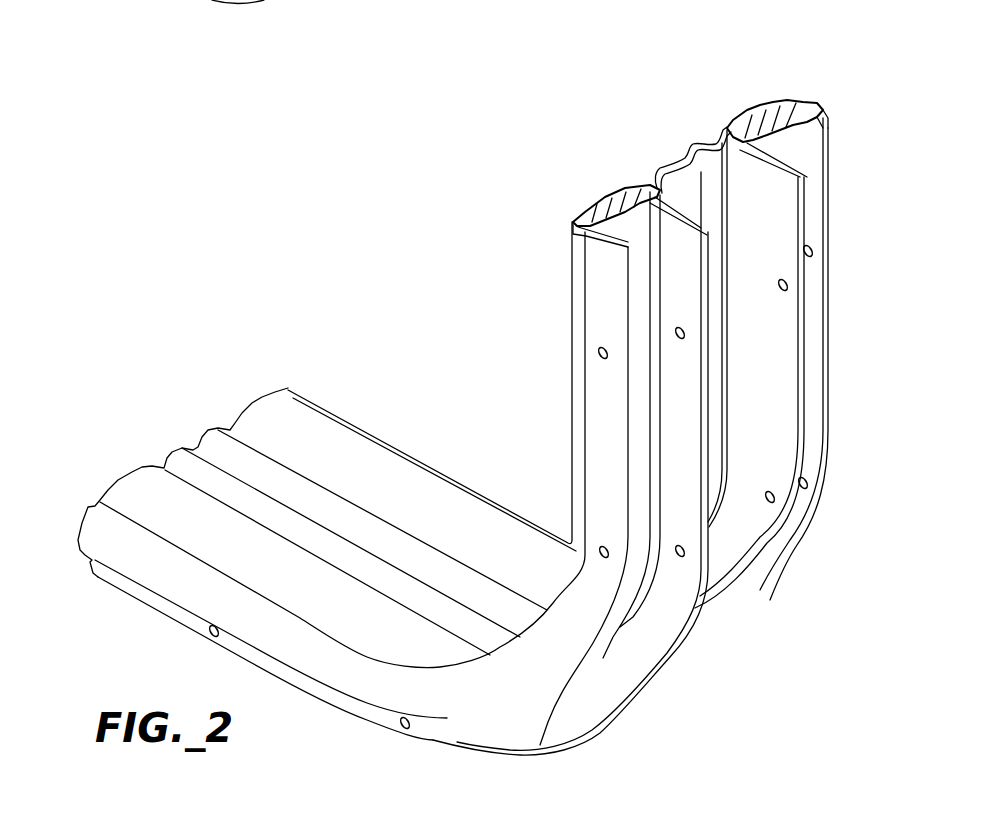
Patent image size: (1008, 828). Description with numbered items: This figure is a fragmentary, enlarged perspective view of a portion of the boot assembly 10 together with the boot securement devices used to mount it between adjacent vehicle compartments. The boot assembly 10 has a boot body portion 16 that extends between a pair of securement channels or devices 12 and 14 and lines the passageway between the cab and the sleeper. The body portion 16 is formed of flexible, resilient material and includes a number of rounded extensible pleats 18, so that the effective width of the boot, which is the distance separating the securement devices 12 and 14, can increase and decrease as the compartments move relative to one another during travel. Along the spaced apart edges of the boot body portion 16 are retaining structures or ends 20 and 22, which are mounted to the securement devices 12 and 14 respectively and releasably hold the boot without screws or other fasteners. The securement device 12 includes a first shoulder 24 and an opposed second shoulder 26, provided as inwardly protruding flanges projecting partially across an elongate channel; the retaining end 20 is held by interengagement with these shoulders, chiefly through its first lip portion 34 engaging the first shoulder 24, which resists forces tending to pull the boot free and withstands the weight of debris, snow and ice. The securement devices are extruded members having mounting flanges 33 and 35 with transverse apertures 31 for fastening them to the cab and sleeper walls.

The boot assembly 10 is at (755, 94).
The securement channel 12 is at (837, 300).
The securement channel 14 is at (597, 712).
The boot body portion 16 is at (649, 164).
The extensible pleats 18 is at (210, 437).
The retaining structure 20 is at (760, 97).
The retaining structure 22 is at (615, 188).
The first shoulder 24 is at (740, 122).
The second shoulder 26 is at (800, 114).
The transverse apertures 31 is at (678, 342).
The mounting flange 33 is at (722, 572).
The first lip portion 34 is at (755, 137).
The mounting flange 35 is at (828, 488).